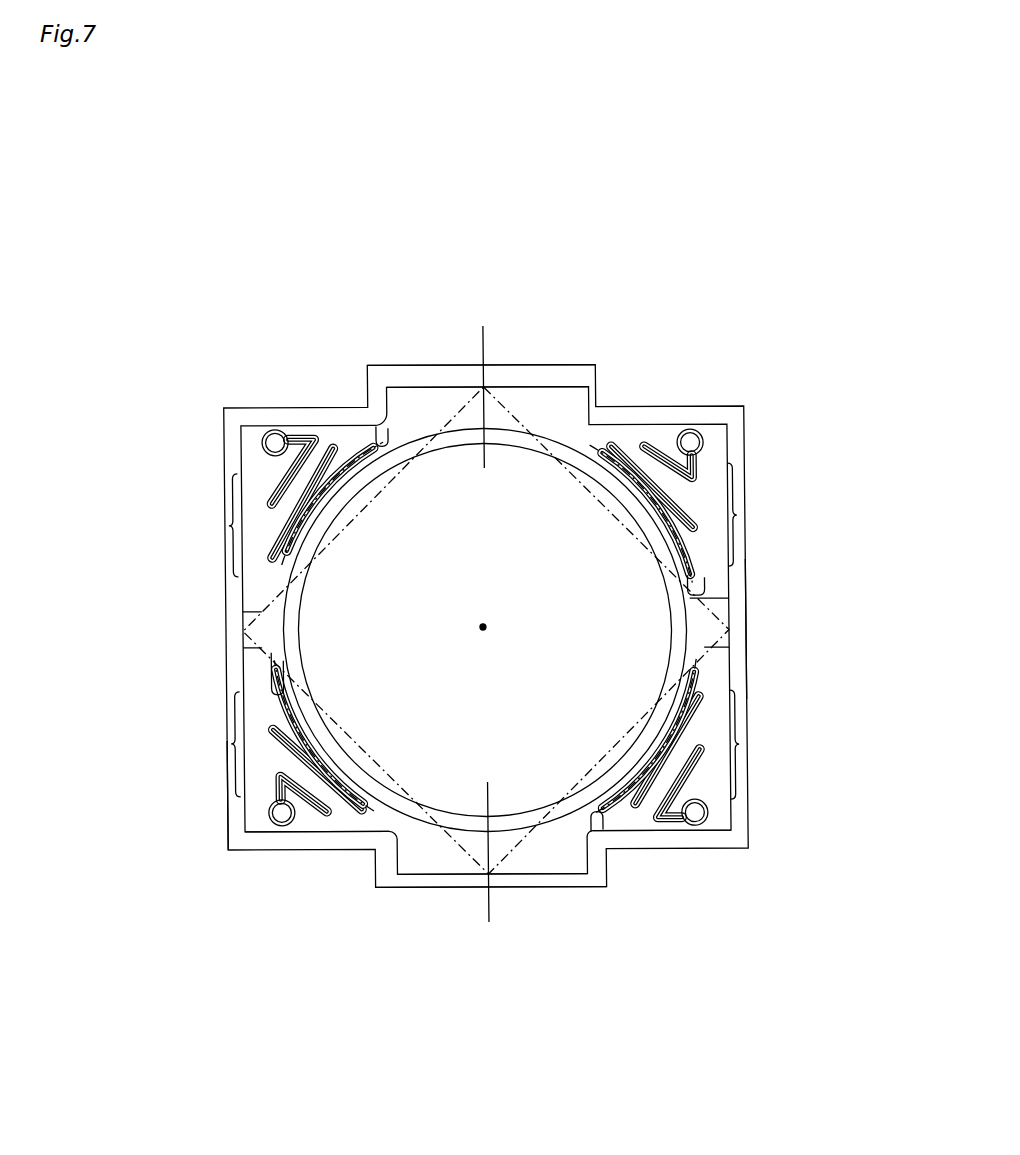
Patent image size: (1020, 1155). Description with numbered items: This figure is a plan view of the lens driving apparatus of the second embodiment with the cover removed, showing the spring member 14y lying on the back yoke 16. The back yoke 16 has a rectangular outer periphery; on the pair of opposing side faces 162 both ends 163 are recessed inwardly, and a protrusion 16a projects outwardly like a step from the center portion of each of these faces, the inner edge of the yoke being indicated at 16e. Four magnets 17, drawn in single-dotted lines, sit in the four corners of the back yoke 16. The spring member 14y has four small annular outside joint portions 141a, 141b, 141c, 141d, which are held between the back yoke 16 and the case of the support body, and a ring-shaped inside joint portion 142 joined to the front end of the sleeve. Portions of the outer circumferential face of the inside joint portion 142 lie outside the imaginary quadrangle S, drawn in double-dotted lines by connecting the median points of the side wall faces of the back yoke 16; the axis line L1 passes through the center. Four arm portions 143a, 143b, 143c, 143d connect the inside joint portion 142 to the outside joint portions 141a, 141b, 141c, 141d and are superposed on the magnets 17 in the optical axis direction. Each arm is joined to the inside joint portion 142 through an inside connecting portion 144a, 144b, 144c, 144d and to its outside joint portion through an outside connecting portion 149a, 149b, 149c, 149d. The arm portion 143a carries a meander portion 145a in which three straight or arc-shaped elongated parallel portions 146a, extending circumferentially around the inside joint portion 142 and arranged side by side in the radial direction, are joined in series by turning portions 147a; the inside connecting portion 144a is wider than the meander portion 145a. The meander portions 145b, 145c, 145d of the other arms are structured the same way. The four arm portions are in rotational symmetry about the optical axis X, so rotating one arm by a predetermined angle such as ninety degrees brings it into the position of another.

The spring member 14y is at (485, 630).
The back yoke 16 is at (485, 626).
The protrusion 16a is at (486, 626).
The frame inner edge portion 16e is at (490, 631).
The magnet 17 is at (485, 628).
The outside joint portion 141a is at (690, 442).
The outside joint portion 141b is at (275, 443).
The outside joint portion 141c is at (282, 813).
The outside joint portion 141d is at (695, 812).
The inside joint portion 142 is at (484, 630).
The arm portion 143a is at (646, 514).
The arm portion 143b is at (330, 499).
The arm portion 143c is at (319, 736).
The arm portion 143d is at (648, 740).
The inside connecting portion 144a is at (695, 585).
The inside connecting portion 144b is at (382, 436).
The inside connecting portion 144c is at (277, 674).
The inside connecting portion 144d is at (597, 822).
The meander portion 145a is at (732, 514).
The meander portion 145b is at (281, 508).
The meander portion 145c is at (296, 751).
The meander portion 145d is at (687, 753).
The elongated parallel portion 146a is at (668, 461).
The turning portion 147a is at (652, 486).
The outside connecting portion 149a is at (689, 442).
The outside connecting portion 149b is at (274, 442).
The outside connecting portion 149c is at (281, 812).
The outside connecting portion 149d is at (694, 812).
The side face 162 is at (486, 704).
The end 163 is at (488, 831).
The axis line L1 is at (486, 624).
The imaginary quadrangle S is at (486, 630).
The optical axis X is at (483, 627).